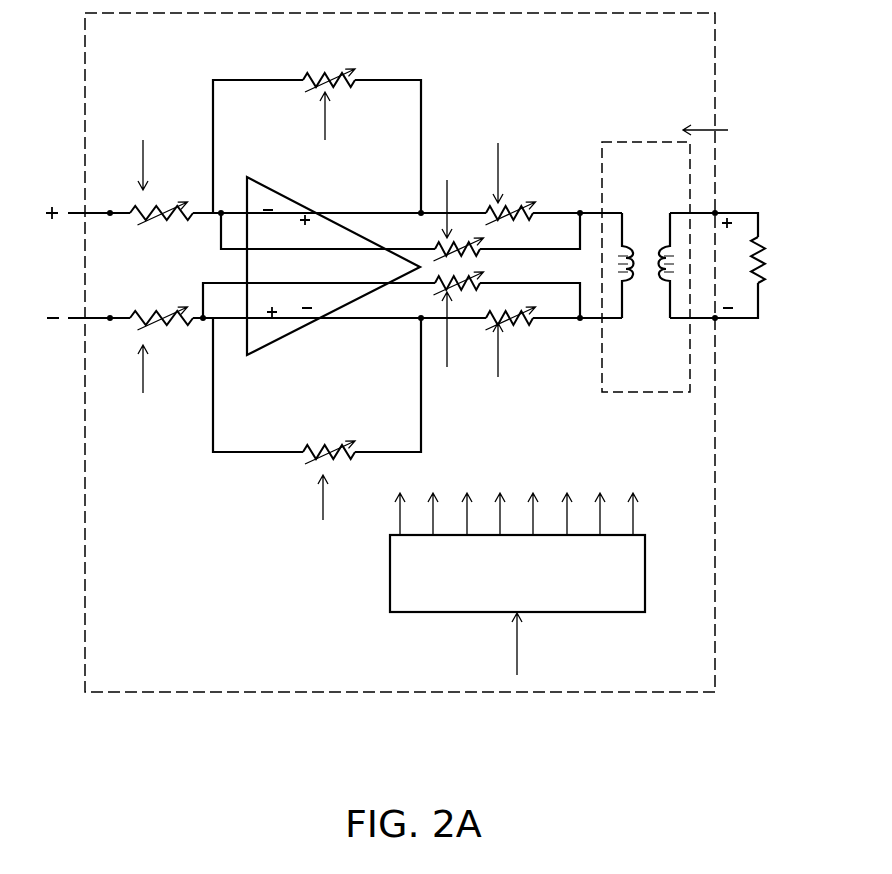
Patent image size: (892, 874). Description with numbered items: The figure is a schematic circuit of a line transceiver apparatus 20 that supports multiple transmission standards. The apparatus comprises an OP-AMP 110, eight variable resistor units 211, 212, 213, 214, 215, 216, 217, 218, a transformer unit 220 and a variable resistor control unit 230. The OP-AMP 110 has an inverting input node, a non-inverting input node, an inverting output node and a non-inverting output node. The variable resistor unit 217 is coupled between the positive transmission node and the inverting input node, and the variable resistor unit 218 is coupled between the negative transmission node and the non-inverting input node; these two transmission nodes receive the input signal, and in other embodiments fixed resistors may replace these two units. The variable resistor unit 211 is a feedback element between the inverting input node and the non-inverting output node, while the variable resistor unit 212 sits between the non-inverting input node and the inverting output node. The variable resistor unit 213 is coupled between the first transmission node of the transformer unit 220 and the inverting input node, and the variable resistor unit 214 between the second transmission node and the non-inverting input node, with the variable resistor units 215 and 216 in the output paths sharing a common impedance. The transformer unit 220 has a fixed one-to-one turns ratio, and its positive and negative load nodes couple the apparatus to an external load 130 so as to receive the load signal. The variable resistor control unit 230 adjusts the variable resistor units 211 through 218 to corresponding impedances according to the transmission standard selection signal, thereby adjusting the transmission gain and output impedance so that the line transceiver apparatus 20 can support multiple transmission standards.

The line transceiver apparatus 20 is at (425, 693).
The OP-AMP 110 is at (264, 179).
The external load 130 is at (760, 277).
The variable resistor unit 211 is at (318, 79).
The variable resistor unit 212 is at (337, 458).
The variable resistor unit 213 is at (458, 244).
The variable resistor unit 214 is at (458, 288).
The variable resistor unit 215 is at (500, 207).
The variable resistor unit 216 is at (500, 325).
The variable resistor unit 217 is at (158, 203).
The variable resistor unit 218 is at (178, 330).
The transformer unit 220 is at (630, 142).
The variable resistor control unit 230 is at (645, 587).